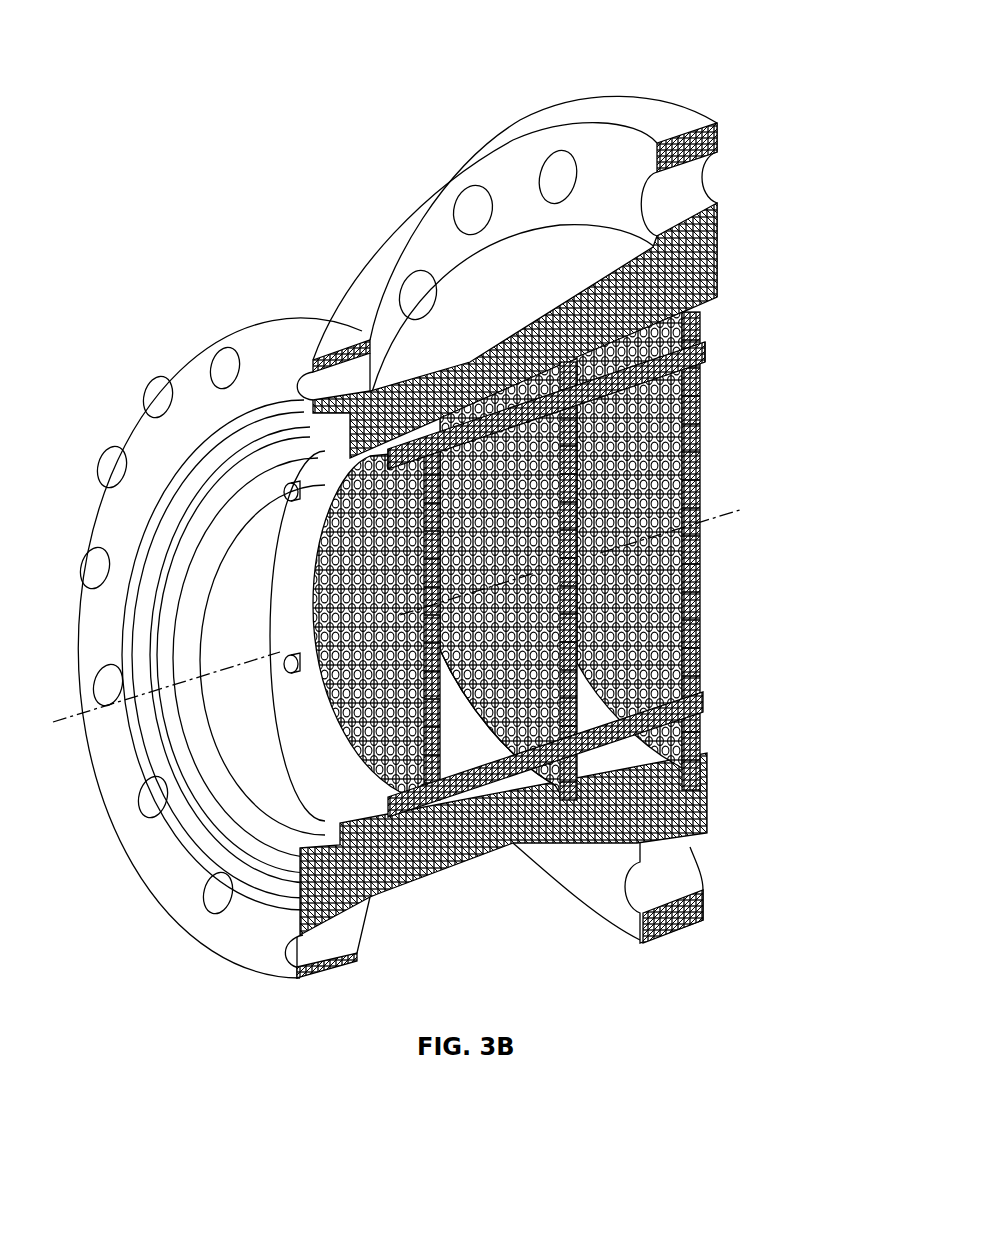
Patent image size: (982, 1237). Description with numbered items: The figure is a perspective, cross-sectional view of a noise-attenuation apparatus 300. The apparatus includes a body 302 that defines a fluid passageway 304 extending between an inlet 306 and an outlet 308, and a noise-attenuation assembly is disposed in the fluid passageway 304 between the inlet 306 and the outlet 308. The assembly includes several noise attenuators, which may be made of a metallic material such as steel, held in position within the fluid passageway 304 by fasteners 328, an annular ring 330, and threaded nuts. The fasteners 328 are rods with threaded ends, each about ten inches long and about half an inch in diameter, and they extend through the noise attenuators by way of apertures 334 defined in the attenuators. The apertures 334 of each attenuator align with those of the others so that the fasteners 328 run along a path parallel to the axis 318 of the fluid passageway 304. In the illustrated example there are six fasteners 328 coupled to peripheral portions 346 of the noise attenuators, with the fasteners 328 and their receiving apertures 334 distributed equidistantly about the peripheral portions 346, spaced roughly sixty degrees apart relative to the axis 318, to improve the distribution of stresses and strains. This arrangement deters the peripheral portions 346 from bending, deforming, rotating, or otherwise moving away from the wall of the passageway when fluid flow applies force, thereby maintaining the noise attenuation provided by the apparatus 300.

The noise-attenuation apparatus 300 is at (148, 147).
The body 302 is at (286, 335).
The fluid passageway 304 is at (457, 725).
The inlet 306 is at (341, 808).
The outlet 308 is at (713, 496).
The axis 318 is at (68, 720).
The fasteners 328 is at (710, 357).
The annular ring 330 is at (353, 757).
The apertures 334 is at (590, 392).
The peripheral portions 346 is at (697, 728).